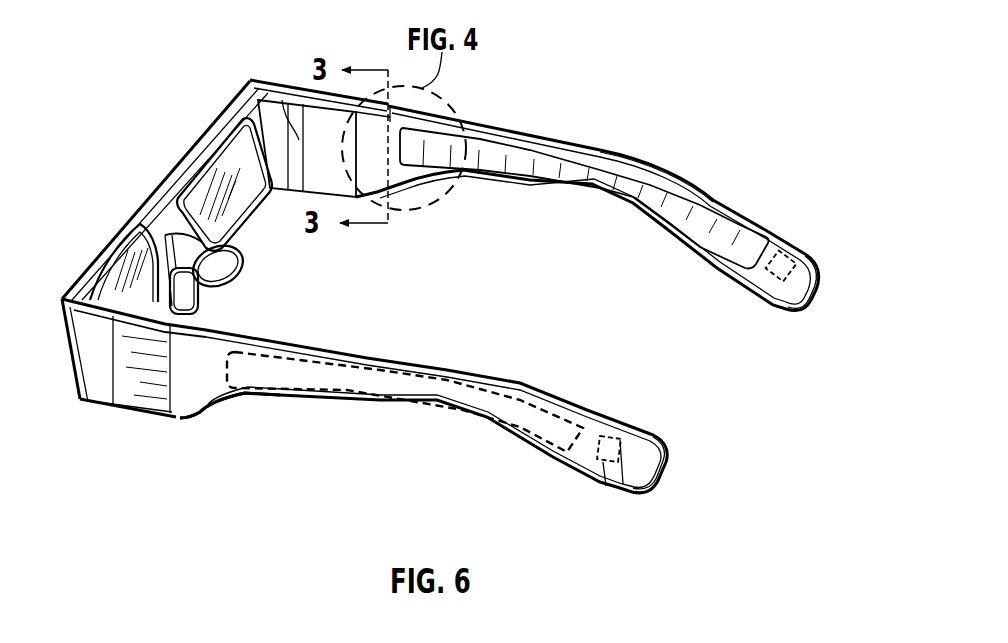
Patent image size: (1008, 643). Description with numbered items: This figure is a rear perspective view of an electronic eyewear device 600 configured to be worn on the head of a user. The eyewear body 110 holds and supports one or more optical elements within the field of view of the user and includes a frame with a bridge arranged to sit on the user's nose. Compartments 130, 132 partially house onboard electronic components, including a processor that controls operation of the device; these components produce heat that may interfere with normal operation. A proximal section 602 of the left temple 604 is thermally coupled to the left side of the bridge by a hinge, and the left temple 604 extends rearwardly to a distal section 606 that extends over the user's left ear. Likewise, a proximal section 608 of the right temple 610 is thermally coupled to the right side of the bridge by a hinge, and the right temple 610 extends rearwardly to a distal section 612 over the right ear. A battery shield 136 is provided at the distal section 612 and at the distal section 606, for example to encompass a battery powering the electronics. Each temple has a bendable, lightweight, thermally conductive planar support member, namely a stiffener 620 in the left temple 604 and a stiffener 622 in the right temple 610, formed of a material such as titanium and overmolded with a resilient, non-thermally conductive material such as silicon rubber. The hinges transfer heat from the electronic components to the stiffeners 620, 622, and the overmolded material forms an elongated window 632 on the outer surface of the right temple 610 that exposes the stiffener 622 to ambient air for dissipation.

The electronic eyewear device 600 is at (152, 49).
The eyewear body 110 is at (157, 175).
The compartment 130 is at (145, 298).
The compartment 132 is at (262, 88).
The battery shield 136 is at (790, 253).
The proximal section of left temple 602 is at (187, 403).
The left temple 604 is at (420, 361).
The distal section of left temple 606 is at (662, 473).
The proximal section of right temple 608 is at (283, 207).
The right temple 610 is at (541, 131).
The distal section of right temple 612 is at (812, 300).
The stiffener 620 is at (393, 397).
The stiffener 622 is at (580, 165).
The elongated window 632 is at (638, 168).